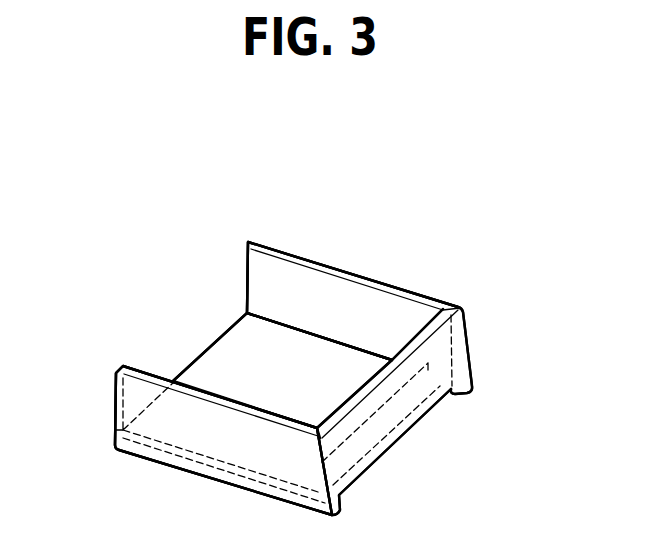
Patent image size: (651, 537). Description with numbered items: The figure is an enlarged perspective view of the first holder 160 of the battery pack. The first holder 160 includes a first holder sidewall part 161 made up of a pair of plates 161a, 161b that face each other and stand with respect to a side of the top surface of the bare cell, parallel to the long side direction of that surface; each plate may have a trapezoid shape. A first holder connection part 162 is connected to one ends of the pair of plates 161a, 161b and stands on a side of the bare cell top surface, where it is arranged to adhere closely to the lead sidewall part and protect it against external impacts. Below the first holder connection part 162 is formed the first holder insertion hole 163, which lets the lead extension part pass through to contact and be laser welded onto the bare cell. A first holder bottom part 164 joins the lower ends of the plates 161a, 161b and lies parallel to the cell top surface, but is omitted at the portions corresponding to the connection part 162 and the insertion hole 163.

The first holder 160 is at (484, 237).
The first holder sidewall part 161 is at (143, 220).
The plate 161a is at (120, 366).
The plate 161b is at (247, 244).
The first holder connection part 162 is at (453, 343).
The first holder insertion hole 163 is at (412, 438).
The first holder bottom part 164 is at (297, 356).